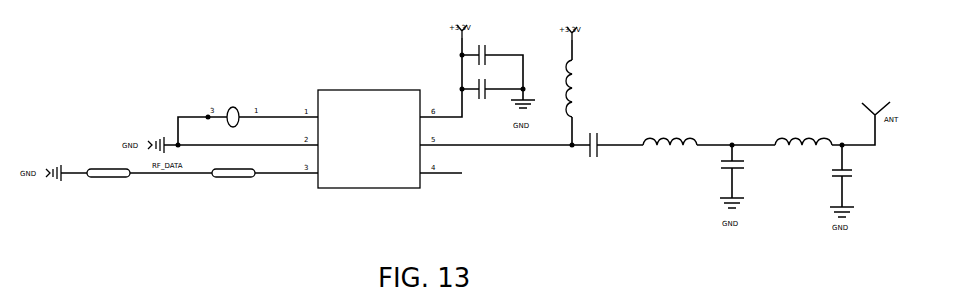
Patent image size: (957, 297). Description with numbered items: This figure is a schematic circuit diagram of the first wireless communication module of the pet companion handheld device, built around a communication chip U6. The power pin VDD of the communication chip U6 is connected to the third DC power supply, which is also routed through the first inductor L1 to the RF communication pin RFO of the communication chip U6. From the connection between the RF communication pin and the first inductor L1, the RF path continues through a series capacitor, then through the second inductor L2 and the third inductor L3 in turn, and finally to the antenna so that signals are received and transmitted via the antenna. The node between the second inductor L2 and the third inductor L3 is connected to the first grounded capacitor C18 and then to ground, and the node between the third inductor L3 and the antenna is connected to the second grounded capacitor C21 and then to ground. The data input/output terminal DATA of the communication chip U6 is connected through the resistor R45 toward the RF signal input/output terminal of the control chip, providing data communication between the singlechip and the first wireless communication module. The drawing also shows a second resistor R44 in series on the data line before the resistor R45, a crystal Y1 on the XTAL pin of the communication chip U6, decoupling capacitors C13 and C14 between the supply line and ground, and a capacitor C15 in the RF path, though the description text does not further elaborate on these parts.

The resistor R44 is at (108, 168).
The resistor R45 is at (233, 168).
The crystal oscillator Y1 is at (233, 112).
The communication chip U6 is at (369, 134).
The capacitor C13 is at (491, 55).
The capacitor C14 is at (491, 89).
The first inductor L1 is at (575, 88).
The capacitor C15 is at (593, 139).
The second inductor L2 is at (670, 135).
The first grounded capacitor C18 is at (740, 165).
The third inductor L3 is at (803, 135).
The second grounded capacitor C21 is at (850, 174).